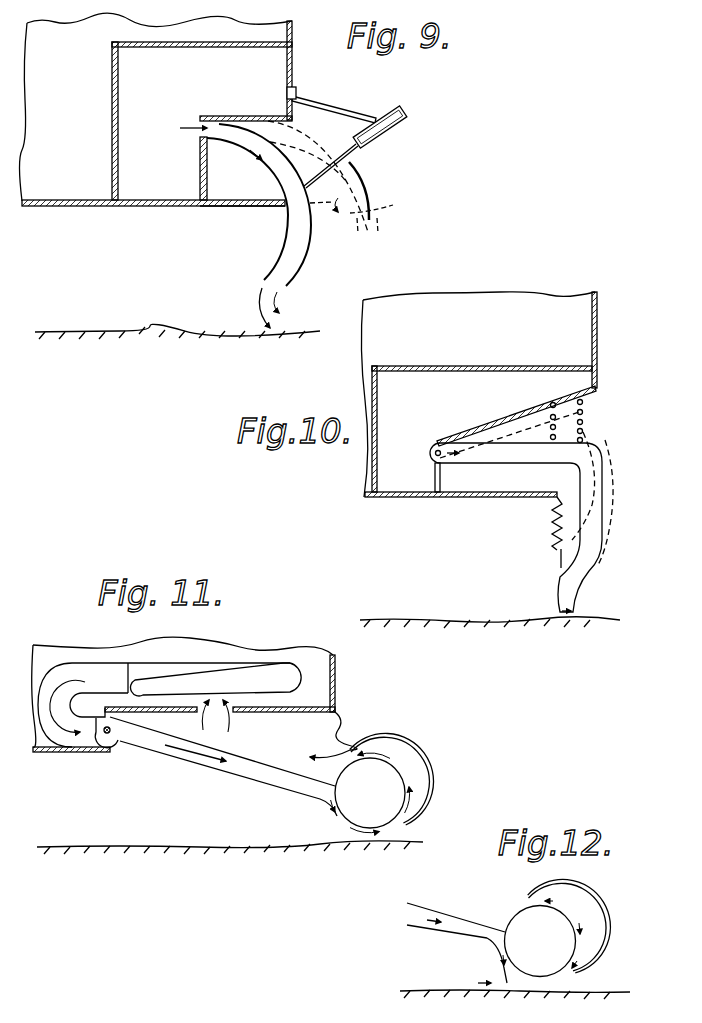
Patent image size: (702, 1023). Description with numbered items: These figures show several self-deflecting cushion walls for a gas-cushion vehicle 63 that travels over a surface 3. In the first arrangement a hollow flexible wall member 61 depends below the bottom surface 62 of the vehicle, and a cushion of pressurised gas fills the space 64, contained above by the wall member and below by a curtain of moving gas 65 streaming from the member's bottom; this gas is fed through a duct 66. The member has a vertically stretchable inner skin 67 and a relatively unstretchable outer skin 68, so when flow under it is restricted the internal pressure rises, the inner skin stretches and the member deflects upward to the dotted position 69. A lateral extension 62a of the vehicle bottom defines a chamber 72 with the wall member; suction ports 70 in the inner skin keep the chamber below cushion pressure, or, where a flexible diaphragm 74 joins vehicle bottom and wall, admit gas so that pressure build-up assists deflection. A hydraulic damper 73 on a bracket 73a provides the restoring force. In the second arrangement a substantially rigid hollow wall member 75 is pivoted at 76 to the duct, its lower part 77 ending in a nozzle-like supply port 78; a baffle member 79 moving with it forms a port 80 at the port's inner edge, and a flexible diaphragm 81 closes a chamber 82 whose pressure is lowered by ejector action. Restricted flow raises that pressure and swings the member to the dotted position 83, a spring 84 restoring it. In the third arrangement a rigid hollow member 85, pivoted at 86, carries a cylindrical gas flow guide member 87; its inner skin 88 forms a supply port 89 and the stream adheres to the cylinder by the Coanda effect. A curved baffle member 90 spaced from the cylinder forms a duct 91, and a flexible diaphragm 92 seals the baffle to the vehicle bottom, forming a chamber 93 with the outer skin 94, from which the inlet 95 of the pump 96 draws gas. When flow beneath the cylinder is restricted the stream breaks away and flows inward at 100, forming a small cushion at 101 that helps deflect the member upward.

In FIG. 9, the surface 3 is at (297, 330).
In FIG. 10, the surface 3 is at (610, 615).
In FIG. 11, the surface 3 is at (143, 843).
In FIG. 12, the surface 3 is at (603, 983).
In FIG. 9, the hollow flexible wall member 61 is at (280, 205).
In FIG. 9, the bottom surface of the vehicle 62 is at (75, 207).
In FIG. 10, the bottom surface of the vehicle 62 is at (412, 497).
In FIG. 11, the bottom surface of the vehicle 62 is at (50, 755).
In FIG. 9, the lateral extension of the vehicle bottom 62a is at (247, 206).
In FIG. 9, the vehicle 63 is at (265, 34).
In FIG. 10, the vehicle 63 is at (537, 308).
In FIG. 11, the vehicle 63 is at (318, 667).
In FIG. 9, the cushion space 64 is at (125, 289).
In FIG. 10, the cushion space 64 is at (451, 584).
In FIG. 11, the cushion space 64 is at (106, 834).
In FIG. 9, the curtain of moving gas 65 is at (258, 303).
In FIG. 10, the curtain of moving gas 65 is at (556, 595).
In FIG. 9, the duct 66 is at (270, 80).
In FIG. 10, the duct 66 is at (570, 377).
In FIG. 9, the inner skin 67 is at (288, 240).
In FIG. 9, the outer skin 68 is at (312, 236).
In FIG. 9, the deflected position 69 is at (370, 173).
In FIG. 9, the suction port 70 is at (260, 157).
In FIG. 9, the chamber 72 is at (224, 194).
In FIG. 9, the hydraulic damper 73 is at (405, 113).
In FIG. 9, the bracket 73a is at (333, 100).
In FIG. 9, the flexible diaphragm 74 is at (375, 210).
In FIG. 10, the hollow wall member 75 is at (592, 469).
In FIG. 10, the pivot 76 is at (430, 453).
In FIG. 10, the lower part of the wall member 77 is at (606, 557).
In FIG. 10, the supply port 78 is at (578, 613).
In FIG. 10, the baffle member 79 is at (561, 555).
In FIG. 10, the port 80 is at (550, 568).
In FIG. 10, the flexible diaphragm 81 is at (550, 523).
In FIG. 10, the chamber 82 is at (475, 483).
In FIG. 10, the deflected position 83 is at (590, 438).
In FIG. 10, the spring 84 is at (583, 404).
In FIG. 11, the hollow wall member 85 is at (223, 770).
In FIG. 12, the hollow wall member 85 is at (450, 930).
In FIG. 11, the pivot 86 is at (122, 750).
In FIG. 11, the gas flow guide member 87 is at (393, 820).
In FIG. 12, the gas flow guide member 87 is at (563, 925).
In FIG. 11, the inner skin 88 is at (290, 794).
In FIG. 11, the supply port 89 is at (327, 820).
In FIG. 11, the curved baffle member 90 is at (418, 778).
In FIG. 12, the curved baffle member 90 is at (573, 910).
In FIG. 11, the duct 91 is at (417, 805).
In FIG. 12, the duct 91 is at (583, 963).
In FIG. 11, the flexible diaphragm 92 is at (353, 727).
In FIG. 12, the flexible diaphragm 92 is at (528, 895).
In FIG. 11, the chamber 93 is at (327, 754).
In FIG. 11, the outer skin 94 is at (227, 747).
In FIG. 11, the pump inlet 95 is at (202, 710).
In FIG. 11, the pump 96 is at (240, 678).
In FIG. 12, the inward gas flow 100 is at (498, 977).
In FIG. 12, the small cushion of pressurised gas 101 is at (512, 982).